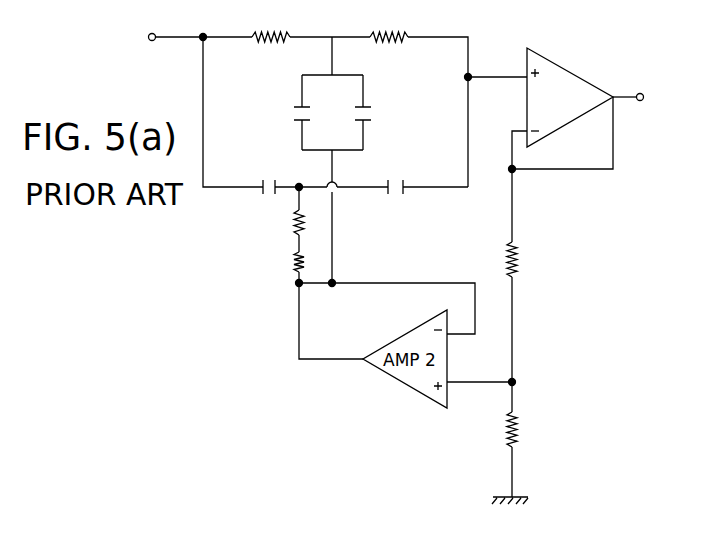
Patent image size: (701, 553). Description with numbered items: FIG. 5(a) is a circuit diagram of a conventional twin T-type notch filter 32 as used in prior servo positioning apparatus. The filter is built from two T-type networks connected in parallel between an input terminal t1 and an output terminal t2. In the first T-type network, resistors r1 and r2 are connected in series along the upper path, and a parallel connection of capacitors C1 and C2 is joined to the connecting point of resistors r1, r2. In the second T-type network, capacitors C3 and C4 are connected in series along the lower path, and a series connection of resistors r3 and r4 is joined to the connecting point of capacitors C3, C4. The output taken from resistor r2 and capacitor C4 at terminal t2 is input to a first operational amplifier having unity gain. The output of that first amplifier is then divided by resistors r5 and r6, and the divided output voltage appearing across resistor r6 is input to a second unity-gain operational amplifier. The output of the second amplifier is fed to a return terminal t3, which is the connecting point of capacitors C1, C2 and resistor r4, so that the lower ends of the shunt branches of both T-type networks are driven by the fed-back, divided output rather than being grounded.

The notch filter 32 is at (573, 67).
The input terminal t1 is at (168, 24).
The output terminal t2 is at (496, 64).
The return terminal t3 is at (299, 295).
The resistor r1 is at (271, 23).
The resistor r2 is at (389, 23).
The resistor r3 is at (285, 224).
The resistor r4 is at (285, 265).
The resistor r5 is at (521, 260).
The resistor r6 is at (521, 429).
The capacitor C1 is at (289, 112).
The capacitor C2 is at (375, 112).
The capacitor C3 is at (260, 174).
The capacitor C4 is at (386, 174).